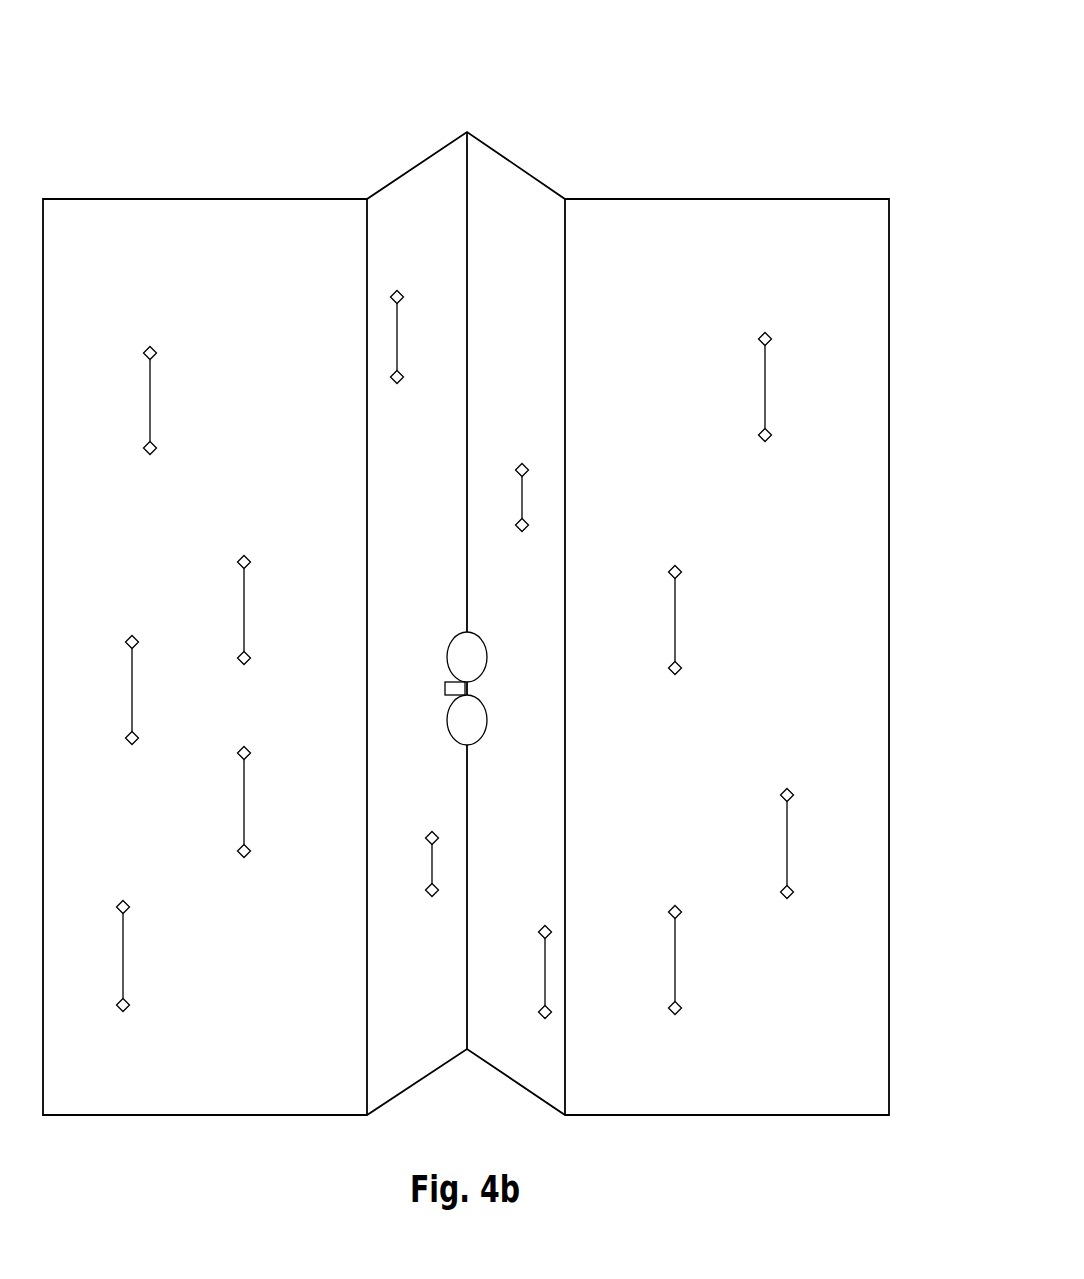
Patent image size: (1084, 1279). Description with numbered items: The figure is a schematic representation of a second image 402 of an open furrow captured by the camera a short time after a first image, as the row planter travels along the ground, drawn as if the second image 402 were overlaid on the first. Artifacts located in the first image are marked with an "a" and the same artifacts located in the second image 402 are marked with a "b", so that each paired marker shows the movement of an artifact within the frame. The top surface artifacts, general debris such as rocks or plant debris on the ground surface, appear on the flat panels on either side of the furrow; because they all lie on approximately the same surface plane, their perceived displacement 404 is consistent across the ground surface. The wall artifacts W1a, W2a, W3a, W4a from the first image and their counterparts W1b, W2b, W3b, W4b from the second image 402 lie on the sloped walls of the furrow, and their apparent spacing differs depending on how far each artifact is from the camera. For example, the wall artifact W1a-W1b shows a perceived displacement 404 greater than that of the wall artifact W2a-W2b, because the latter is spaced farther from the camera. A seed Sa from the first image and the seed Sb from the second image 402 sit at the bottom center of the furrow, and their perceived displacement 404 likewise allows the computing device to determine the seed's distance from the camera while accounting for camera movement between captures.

The second image 402 is at (720, 125).
The perceived displacement 404 is at (512, 665).
The first wall artifact (first image) W1a is at (397, 390).
The first wall artifact (second image) W1b is at (397, 284).
The second wall artifact (first image) W2a is at (432, 903).
The second wall artifact (second image) W2b is at (432, 825).
The third wall artifact (first image) W3a is at (522, 538).
The third wall artifact (second image) W3b is at (522, 457).
The fourth wall artifact (first image) W4a is at (537, 1026).
The fourth wall artifact (second image) W4b is at (537, 919).
The seed (first image) Sa is at (467, 720).
The seed (second image) Sb is at (467, 657).